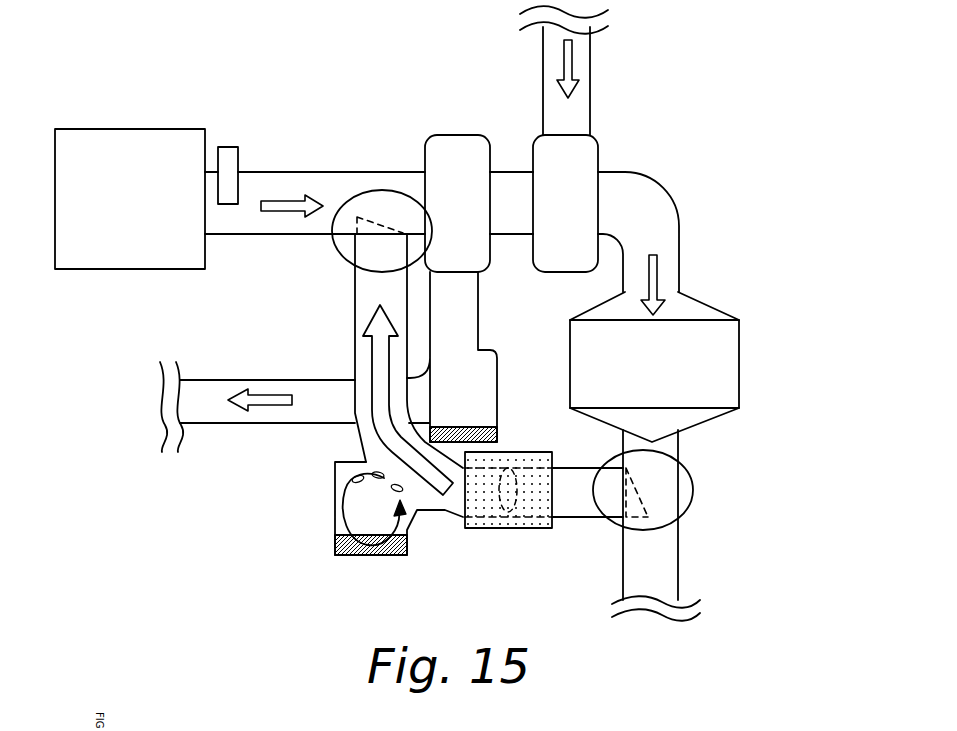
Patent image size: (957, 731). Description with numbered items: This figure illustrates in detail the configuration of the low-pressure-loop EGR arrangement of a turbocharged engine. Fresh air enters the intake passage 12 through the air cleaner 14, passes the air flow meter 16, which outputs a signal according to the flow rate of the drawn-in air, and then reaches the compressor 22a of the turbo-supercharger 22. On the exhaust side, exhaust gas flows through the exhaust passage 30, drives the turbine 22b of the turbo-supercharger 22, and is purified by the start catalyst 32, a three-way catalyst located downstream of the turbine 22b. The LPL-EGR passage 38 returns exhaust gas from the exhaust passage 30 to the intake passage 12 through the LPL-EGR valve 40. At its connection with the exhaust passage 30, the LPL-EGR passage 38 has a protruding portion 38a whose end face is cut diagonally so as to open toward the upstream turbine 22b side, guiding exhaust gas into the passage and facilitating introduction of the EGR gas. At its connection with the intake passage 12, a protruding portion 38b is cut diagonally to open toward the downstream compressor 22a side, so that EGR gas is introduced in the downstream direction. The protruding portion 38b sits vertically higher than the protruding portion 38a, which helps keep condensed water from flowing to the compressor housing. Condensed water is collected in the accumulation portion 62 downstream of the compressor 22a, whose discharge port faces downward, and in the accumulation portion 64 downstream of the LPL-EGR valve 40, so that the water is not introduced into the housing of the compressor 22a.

The intake passage 12 is at (312, 172).
The air cleaner 14 is at (135, 140).
The air flow meter 16 is at (226, 152).
The turbo-supercharger 22 is at (520, 250).
The compressor 22a is at (460, 135).
The turbine 22b is at (590, 155).
The exhaust passage 30 is at (590, 50).
The start catalyst 32 is at (725, 368).
The LPL-EGR passage 38 is at (572, 517).
The protruding portion 38a is at (693, 493).
The protruding portion 38b is at (380, 190).
The LPL-EGR valve 40 is at (528, 528).
The accumulation portion 62 is at (475, 403).
The accumulation portion 64 is at (355, 540).